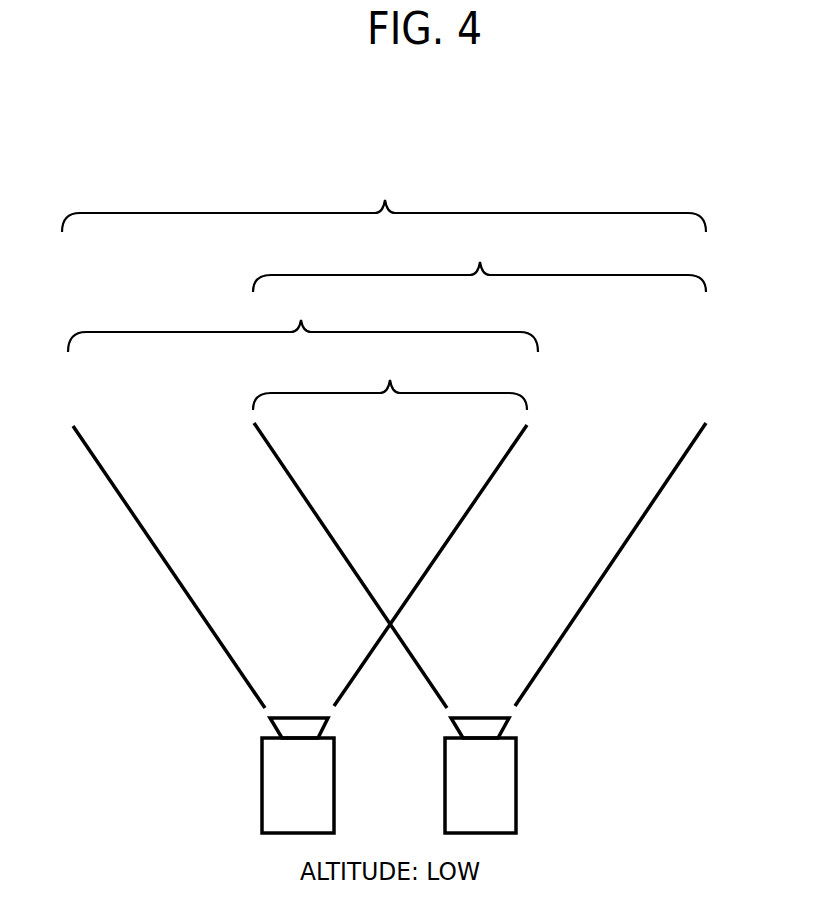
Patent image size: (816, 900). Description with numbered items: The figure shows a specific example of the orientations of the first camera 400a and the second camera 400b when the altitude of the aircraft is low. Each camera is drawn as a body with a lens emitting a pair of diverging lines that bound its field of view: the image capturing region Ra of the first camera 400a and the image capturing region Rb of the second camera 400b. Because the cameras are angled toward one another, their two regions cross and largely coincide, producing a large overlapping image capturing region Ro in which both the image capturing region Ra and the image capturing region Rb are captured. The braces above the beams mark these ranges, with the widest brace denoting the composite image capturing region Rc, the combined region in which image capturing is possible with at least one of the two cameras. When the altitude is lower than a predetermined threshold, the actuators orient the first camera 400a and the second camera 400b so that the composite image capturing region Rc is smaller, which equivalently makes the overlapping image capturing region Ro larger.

The first camera 400a is at (334, 796).
The second camera 400b is at (516, 796).
The overlapping image capturing region Ro is at (390, 377).
The image capturing region of first camera Ra is at (303, 316).
The image capturing region of second camera Rb is at (479, 257).
The composite image capturing region Rc is at (384, 199).